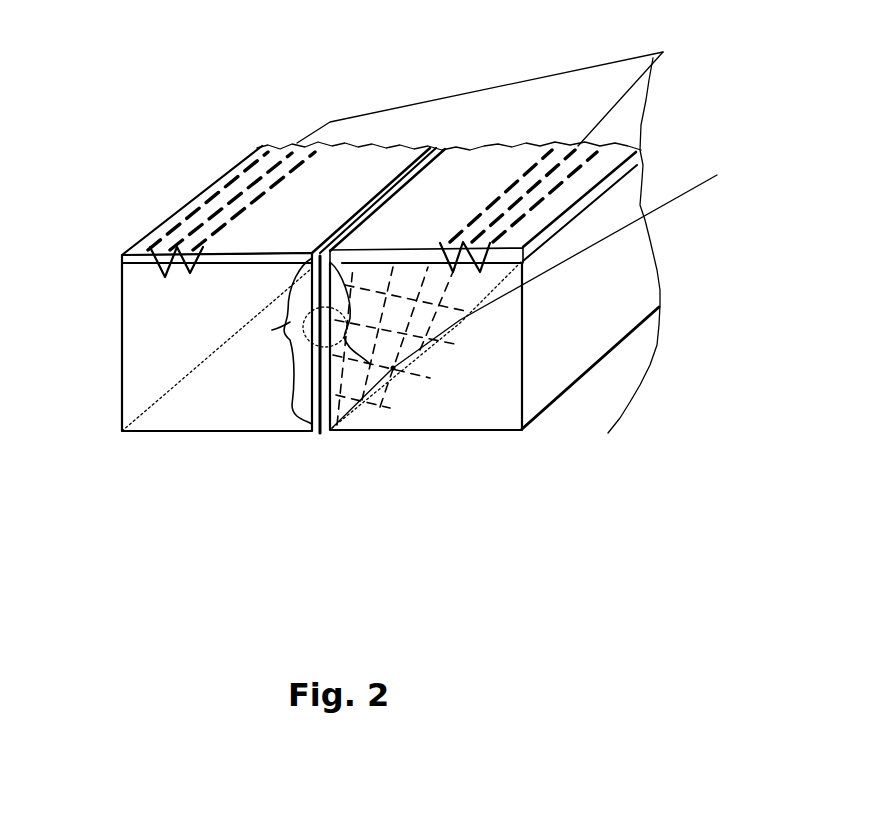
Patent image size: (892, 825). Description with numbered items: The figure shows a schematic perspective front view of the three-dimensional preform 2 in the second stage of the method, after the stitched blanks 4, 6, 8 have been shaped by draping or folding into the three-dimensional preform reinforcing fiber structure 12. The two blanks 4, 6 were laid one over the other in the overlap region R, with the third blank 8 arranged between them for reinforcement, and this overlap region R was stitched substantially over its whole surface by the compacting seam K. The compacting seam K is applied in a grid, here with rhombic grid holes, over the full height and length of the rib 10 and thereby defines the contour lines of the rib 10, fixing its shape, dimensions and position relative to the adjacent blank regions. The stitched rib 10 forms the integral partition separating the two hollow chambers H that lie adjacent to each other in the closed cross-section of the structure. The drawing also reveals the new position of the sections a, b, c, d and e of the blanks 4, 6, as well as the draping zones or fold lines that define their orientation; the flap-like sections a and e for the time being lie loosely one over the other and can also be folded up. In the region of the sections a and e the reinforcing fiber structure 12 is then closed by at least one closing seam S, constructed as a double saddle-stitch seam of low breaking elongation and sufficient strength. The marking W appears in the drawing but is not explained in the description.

The preform 2 is at (163, 169).
The blank 4 is at (121, 362).
The blank 6 is at (622, 250).
The third blank 8 is at (320, 433).
The rib 10 is at (343, 346).
The three-dimensional preform reinforcing fiber structure 12 is at (596, 368).
The closing seam S is at (491, 90).
The compacting seam K is at (534, 293).
The overlap region R is at (288, 328).
The wave symbol W is at (320, 259).
The section a is at (240, 258).
The section b is at (297, 432).
The section c is at (193, 435).
The section d is at (121, 330).
The section e is at (242, 267).
The hollow chamber H is at (281, 372).